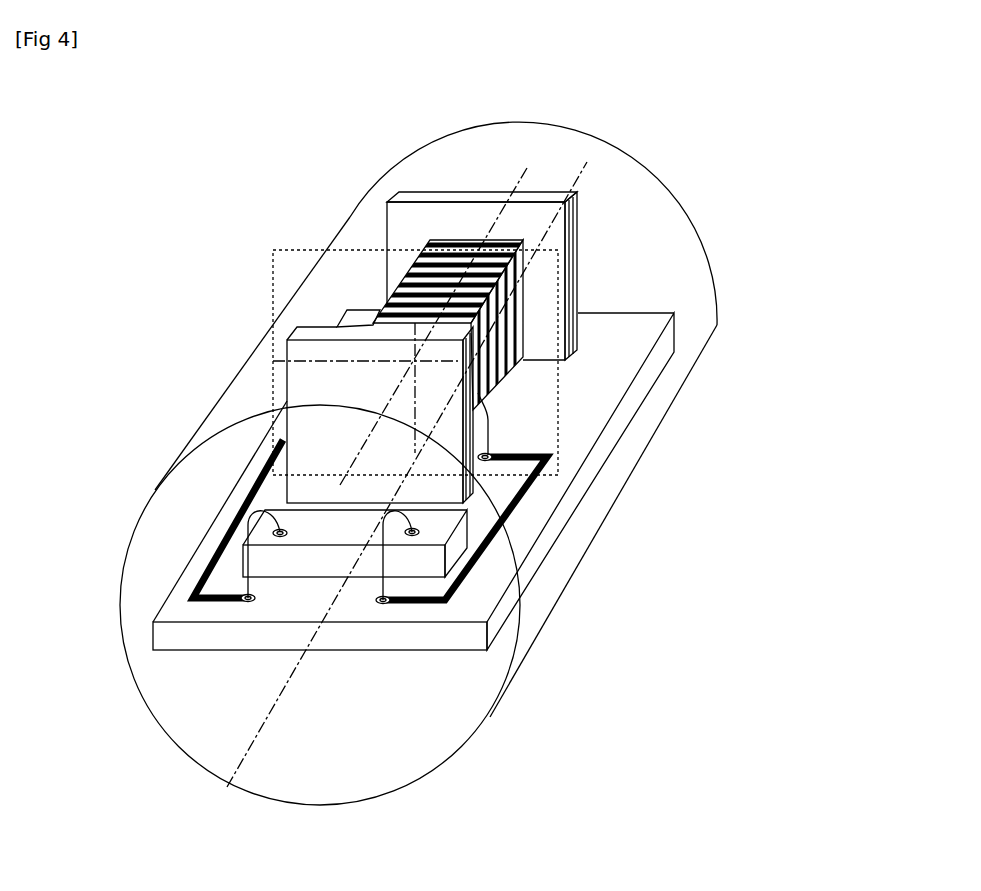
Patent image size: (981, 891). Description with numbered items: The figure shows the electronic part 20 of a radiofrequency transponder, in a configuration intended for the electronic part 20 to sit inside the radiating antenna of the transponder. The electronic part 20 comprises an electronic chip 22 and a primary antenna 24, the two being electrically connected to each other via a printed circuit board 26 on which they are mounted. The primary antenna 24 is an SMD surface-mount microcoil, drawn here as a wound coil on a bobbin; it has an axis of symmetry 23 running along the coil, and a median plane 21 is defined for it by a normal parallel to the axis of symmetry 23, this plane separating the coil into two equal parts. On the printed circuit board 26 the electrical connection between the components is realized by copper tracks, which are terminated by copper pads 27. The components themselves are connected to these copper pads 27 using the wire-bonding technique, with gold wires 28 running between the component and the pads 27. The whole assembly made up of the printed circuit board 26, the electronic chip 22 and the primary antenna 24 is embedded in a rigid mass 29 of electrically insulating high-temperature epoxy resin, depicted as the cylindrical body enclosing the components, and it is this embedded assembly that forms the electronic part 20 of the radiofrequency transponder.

The electronic part 20 is at (203, 307).
The median plane 21 is at (563, 414).
The electronic chip 22 is at (315, 523).
The axis of symmetry 23 is at (493, 222).
The primary antenna 24 is at (492, 287).
The printed circuit board 26 is at (180, 605).
The copper pads 27 is at (277, 605).
The gold wires 28 is at (277, 567).
The rigid mass 29 is at (693, 292).